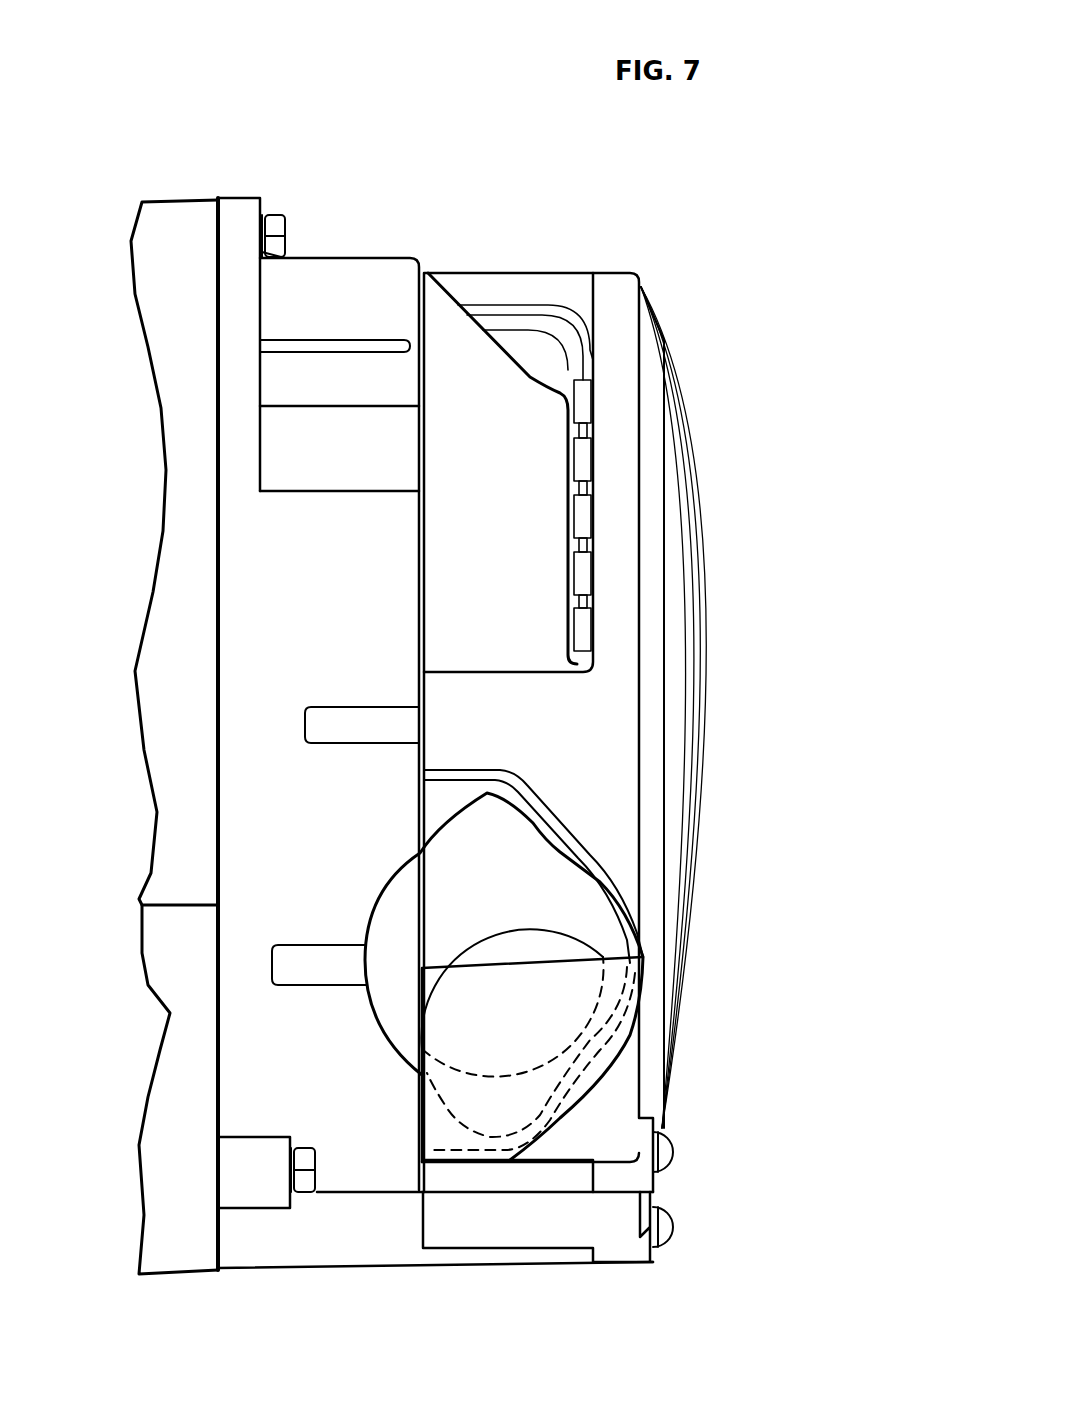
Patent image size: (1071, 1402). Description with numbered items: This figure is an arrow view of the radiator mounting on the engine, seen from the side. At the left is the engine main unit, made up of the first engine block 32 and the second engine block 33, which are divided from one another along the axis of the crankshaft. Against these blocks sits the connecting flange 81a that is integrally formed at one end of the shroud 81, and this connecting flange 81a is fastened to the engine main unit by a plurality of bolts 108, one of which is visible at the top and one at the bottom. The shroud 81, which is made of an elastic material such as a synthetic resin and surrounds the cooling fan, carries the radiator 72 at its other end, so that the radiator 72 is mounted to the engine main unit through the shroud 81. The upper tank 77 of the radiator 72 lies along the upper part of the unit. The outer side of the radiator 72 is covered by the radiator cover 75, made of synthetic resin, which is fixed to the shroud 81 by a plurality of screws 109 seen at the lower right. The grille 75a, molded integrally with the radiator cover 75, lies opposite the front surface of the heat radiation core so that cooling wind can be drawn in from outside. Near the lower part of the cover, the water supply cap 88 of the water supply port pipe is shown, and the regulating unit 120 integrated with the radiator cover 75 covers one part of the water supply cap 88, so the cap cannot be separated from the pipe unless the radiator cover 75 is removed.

The first engine block 32 is at (178, 440).
The second engine block 33 is at (178, 1110).
The radiator 72 is at (493, 373).
The radiator cover 75 is at (538, 767).
The grille 75a is at (700, 718).
The upper tank 77 is at (540, 523).
The shroud 81 is at (392, 278).
The connecting flange 81a is at (237, 208).
The water supply cap 88 is at (420, 920).
The bolts 108 is at (273, 240).
The screws 109 is at (673, 1160).
The regulating unit 120 is at (465, 1012).